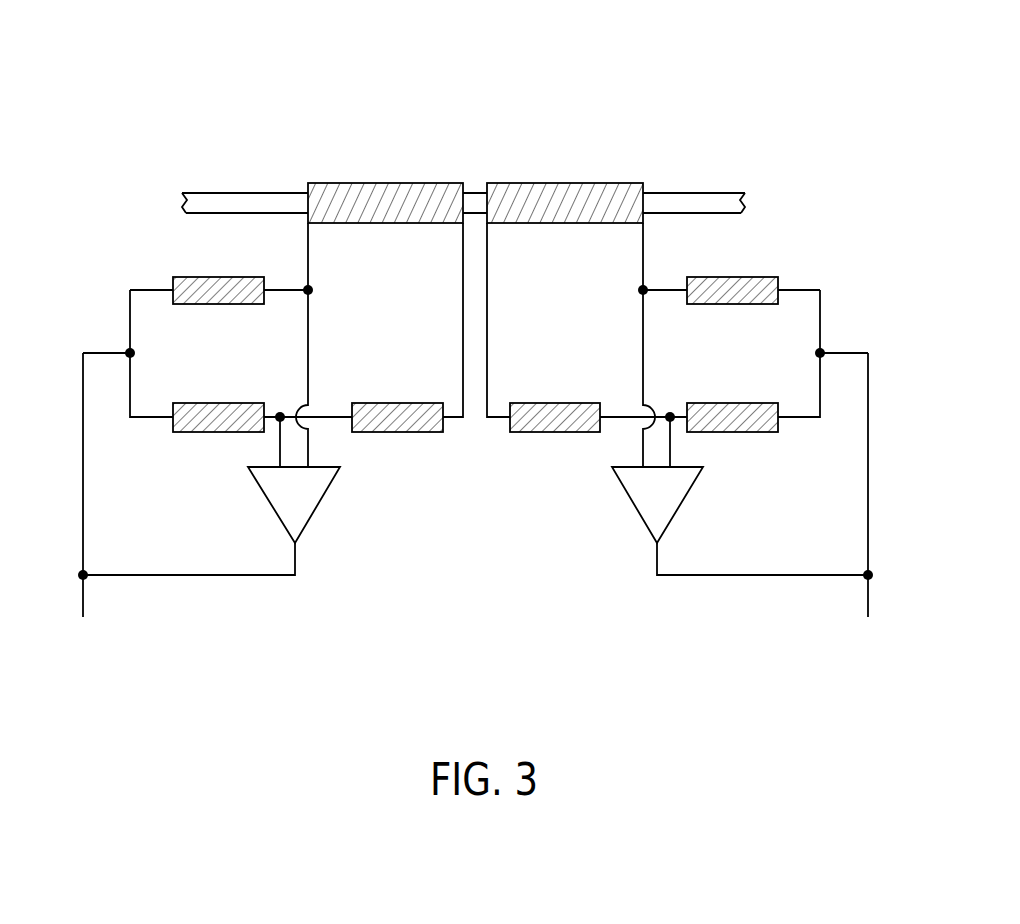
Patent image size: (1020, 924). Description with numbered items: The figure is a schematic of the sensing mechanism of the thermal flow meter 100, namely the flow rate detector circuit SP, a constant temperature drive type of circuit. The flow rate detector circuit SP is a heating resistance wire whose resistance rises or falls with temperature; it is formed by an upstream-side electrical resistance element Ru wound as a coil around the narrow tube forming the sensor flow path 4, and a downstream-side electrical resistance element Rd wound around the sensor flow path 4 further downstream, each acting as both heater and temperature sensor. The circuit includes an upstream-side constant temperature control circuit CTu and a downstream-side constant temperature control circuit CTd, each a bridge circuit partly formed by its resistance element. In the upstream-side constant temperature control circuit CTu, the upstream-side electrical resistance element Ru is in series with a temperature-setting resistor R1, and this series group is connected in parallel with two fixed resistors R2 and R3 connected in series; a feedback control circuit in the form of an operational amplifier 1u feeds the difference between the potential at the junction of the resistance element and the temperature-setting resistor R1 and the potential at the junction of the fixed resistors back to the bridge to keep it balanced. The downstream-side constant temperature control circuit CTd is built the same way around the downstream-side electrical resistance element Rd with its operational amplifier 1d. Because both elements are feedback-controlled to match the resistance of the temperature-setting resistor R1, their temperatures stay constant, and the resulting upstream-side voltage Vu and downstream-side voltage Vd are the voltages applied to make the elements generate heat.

The sensor device 100 is at (160, 110).
The sensor flow path 4 is at (237, 215).
The upstream-side electrical resistance element Ru is at (383, 225).
The downstream-side electrical resistance element Rd is at (565, 225).
The temperature-setting resistor R1 is at (218, 305).
The fixed resistor R2 is at (218, 400).
The fixed resistor R3 is at (398, 400).
The upstream amplifier 1u is at (270, 605).
The downstream amplifier 1d is at (660, 605).
The flow rate detector circuit SP is at (460, 525).
The upstream-side constant temperature control circuit CTu is at (72, 486).
The downstream-side constant temperature control circuit CTd is at (885, 453).
The upstream-side voltage Vu is at (81, 630).
The downstream-side voltage Vd is at (868, 630).